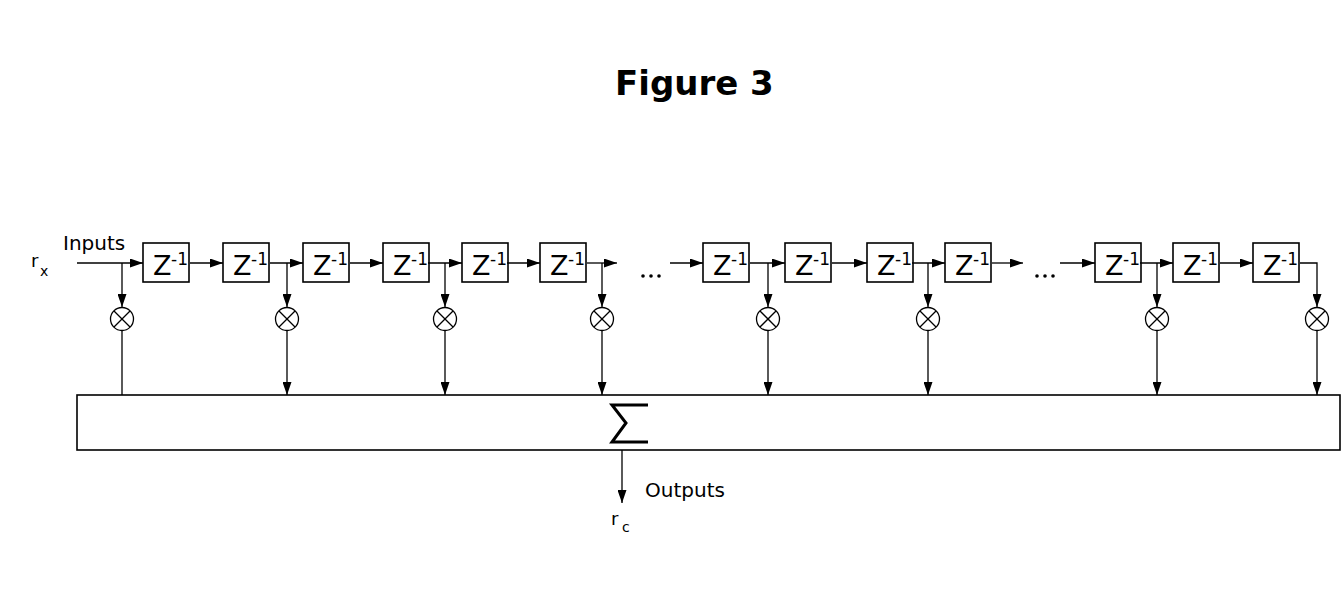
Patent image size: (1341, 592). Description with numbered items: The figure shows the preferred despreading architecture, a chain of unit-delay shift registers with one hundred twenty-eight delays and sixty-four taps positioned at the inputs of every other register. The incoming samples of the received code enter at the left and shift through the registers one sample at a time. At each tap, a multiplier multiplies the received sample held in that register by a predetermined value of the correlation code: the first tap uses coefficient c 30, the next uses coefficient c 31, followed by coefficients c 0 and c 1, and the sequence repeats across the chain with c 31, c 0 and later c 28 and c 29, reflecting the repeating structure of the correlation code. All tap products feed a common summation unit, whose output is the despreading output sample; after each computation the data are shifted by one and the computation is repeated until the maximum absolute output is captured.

The correlation code coefficient c30 30 is at (110, 319).
The correlation code coefficient c31 31 is at (755, 319).
The correlation code coefficient c0 0 is at (917, 319).
The correlation code coefficient c1 1 is at (588, 319).
The correlation code coefficient c28 28 is at (1142, 319).
The correlation code coefficient c29 29 is at (1302, 319).